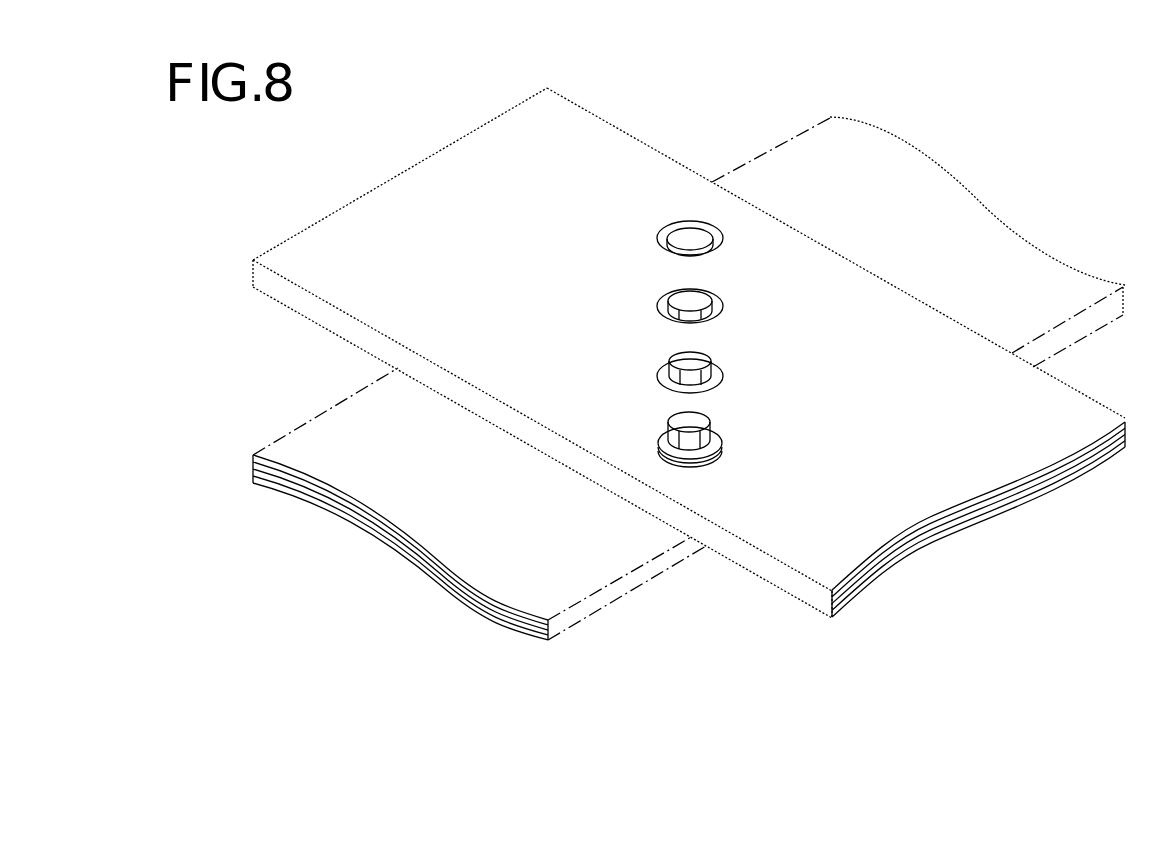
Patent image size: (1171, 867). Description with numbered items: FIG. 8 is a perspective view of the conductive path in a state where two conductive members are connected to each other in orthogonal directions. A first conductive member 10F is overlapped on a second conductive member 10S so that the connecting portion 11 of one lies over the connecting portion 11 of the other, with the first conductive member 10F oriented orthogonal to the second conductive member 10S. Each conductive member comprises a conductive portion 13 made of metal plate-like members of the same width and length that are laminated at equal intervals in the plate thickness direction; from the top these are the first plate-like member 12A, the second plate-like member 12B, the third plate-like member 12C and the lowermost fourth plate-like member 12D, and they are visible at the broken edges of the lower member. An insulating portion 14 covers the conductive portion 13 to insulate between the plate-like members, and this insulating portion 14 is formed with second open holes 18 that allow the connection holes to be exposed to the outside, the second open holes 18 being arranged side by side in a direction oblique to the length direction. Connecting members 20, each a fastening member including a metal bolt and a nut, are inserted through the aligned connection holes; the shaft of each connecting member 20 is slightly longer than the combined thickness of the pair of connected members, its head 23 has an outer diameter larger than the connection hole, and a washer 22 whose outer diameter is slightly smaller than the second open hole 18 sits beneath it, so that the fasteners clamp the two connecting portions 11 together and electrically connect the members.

The first conductive member 10F is at (585, 130).
The second conductive member 10S is at (827, 133).
The connecting portion 11 is at (689, 335).
The first plate-like member 12A is at (1024, 498).
The second plate-like member 12B is at (990, 513).
The third plate-like member 12C is at (968, 522).
The fourth plate-like member 12D is at (1103, 555).
The conductive portion 13 is at (711, 530).
The insulating portion 14 is at (483, 578).
The second open hole 18 is at (665, 452).
The connecting member 20 is at (690, 240).
The washer 22 is at (693, 448).
The head 23 is at (705, 415).